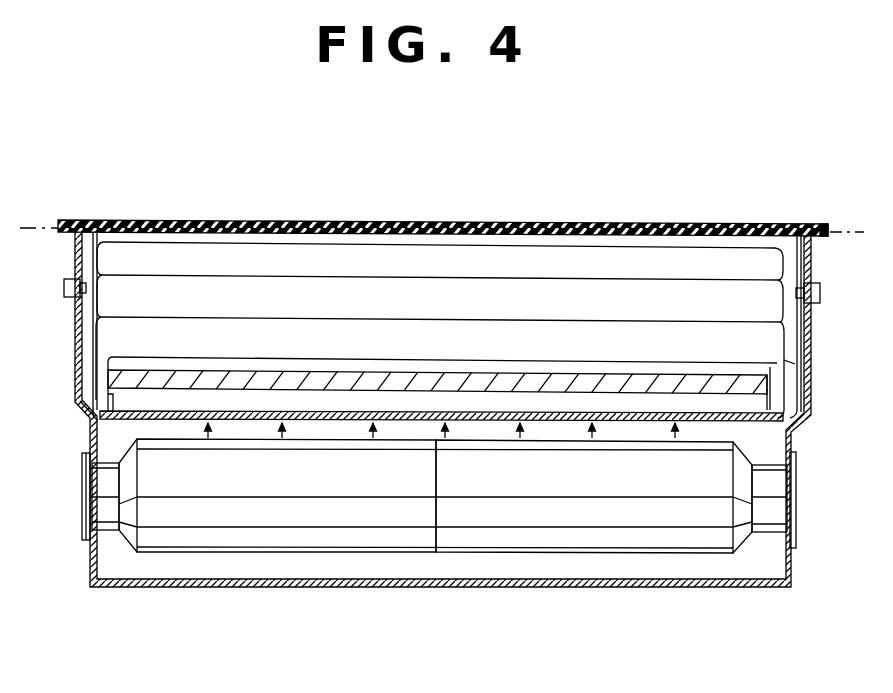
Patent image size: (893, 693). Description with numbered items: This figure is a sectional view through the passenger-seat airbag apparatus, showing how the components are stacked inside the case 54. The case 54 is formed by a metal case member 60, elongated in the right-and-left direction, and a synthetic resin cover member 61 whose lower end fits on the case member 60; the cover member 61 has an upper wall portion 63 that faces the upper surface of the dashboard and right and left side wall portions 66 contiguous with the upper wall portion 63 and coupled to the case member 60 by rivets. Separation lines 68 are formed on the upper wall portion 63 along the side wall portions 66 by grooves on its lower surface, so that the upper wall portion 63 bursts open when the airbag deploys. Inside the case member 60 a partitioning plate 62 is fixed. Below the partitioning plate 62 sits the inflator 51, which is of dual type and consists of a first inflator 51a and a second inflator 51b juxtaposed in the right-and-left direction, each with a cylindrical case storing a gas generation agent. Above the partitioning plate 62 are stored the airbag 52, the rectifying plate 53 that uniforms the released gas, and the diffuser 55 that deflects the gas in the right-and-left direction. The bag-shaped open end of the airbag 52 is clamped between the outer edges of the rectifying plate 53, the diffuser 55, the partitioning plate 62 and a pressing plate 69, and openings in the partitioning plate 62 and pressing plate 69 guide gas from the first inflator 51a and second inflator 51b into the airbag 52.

The inflator 51 is at (701, 552).
The first inflator 51a is at (302, 554).
The second inflator 51b is at (531, 555).
The airbag 52 is at (802, 307).
The rectifying plate 53 is at (80, 408).
The case 54 is at (90, 160).
The diffuser 55 is at (796, 375).
The case member 60 is at (71, 341).
The cover member 61 is at (63, 251).
The partitioning plate 62 is at (235, 422).
The upper wall portion 63 is at (459, 221).
The side wall portions 66 is at (68, 282).
The separation lines 68 is at (803, 224).
The pressing plate 69 is at (94, 436).